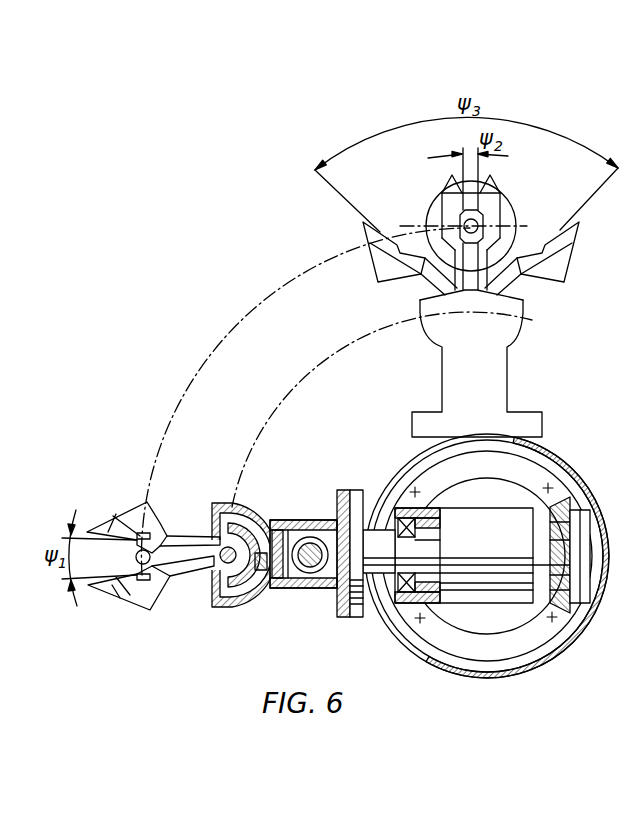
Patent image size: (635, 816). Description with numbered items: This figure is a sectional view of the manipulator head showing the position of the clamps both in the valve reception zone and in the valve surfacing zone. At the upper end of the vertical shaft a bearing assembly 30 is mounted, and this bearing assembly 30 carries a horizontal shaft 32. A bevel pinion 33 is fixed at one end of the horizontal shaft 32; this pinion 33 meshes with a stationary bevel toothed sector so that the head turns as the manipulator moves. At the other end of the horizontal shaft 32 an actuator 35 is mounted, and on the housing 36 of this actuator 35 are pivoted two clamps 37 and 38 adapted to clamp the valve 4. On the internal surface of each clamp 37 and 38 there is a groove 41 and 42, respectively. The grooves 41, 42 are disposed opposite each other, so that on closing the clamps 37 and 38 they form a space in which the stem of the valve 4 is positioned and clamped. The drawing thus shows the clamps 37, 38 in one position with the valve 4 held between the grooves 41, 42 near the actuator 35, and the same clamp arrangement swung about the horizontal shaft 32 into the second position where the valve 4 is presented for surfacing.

The valve 4 is at (153, 549).
The bearing assembly 30 is at (403, 607).
The horizontal shaft 32 is at (327, 553).
The bevel pinion 33 is at (572, 510).
The actuator 35 is at (353, 489).
The housing 36 is at (286, 522).
The clamp 37 is at (150, 521).
The clamp 38 is at (156, 581).
The groove 41 is at (122, 517).
The groove 42 is at (120, 595).